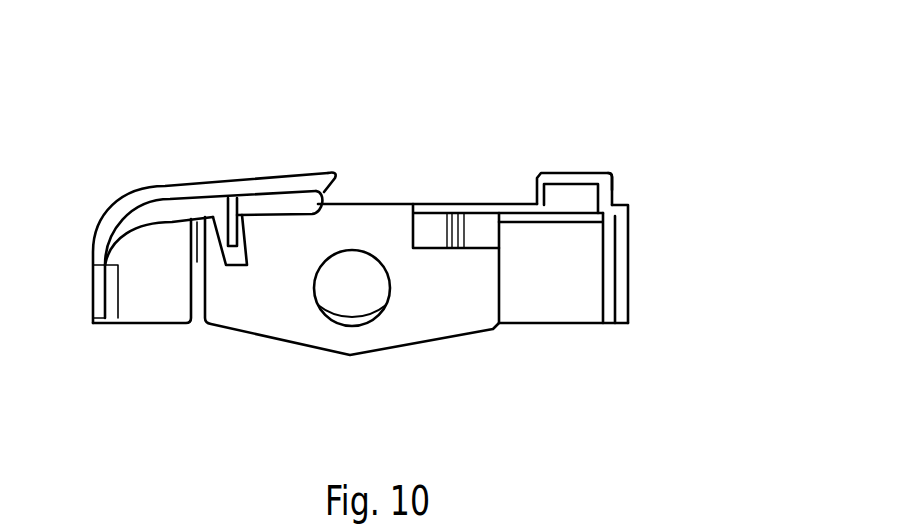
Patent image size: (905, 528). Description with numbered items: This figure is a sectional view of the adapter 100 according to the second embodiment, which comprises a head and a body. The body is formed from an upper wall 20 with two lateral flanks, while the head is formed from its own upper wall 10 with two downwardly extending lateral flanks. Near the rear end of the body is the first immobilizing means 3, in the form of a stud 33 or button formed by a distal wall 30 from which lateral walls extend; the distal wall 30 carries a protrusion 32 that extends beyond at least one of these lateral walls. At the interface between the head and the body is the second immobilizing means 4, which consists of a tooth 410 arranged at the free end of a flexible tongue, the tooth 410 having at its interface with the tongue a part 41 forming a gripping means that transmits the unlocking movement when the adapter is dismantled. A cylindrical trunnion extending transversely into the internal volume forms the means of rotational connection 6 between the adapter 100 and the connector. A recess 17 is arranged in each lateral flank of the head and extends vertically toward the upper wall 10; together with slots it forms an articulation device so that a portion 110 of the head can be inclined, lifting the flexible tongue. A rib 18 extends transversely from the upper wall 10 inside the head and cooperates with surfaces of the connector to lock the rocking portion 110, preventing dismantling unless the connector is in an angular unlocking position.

The first immobilizing means 3 is at (637, 191).
The second immobilizing means 4 is at (331, 138).
The means of rotational connection 6 is at (406, 315).
The upper wall 10 is at (237, 185).
The recess 17 is at (197, 262).
The rib 18 is at (216, 270).
The upper wall 20 is at (395, 204).
The distal wall 30 is at (577, 180).
The protrusion 32 is at (538, 176).
The stud 33 is at (628, 163).
The gripping part 41 is at (313, 170).
The adapter 100 is at (606, 348).
The portion of the head 110 is at (135, 290).
The tooth 410 is at (333, 175).